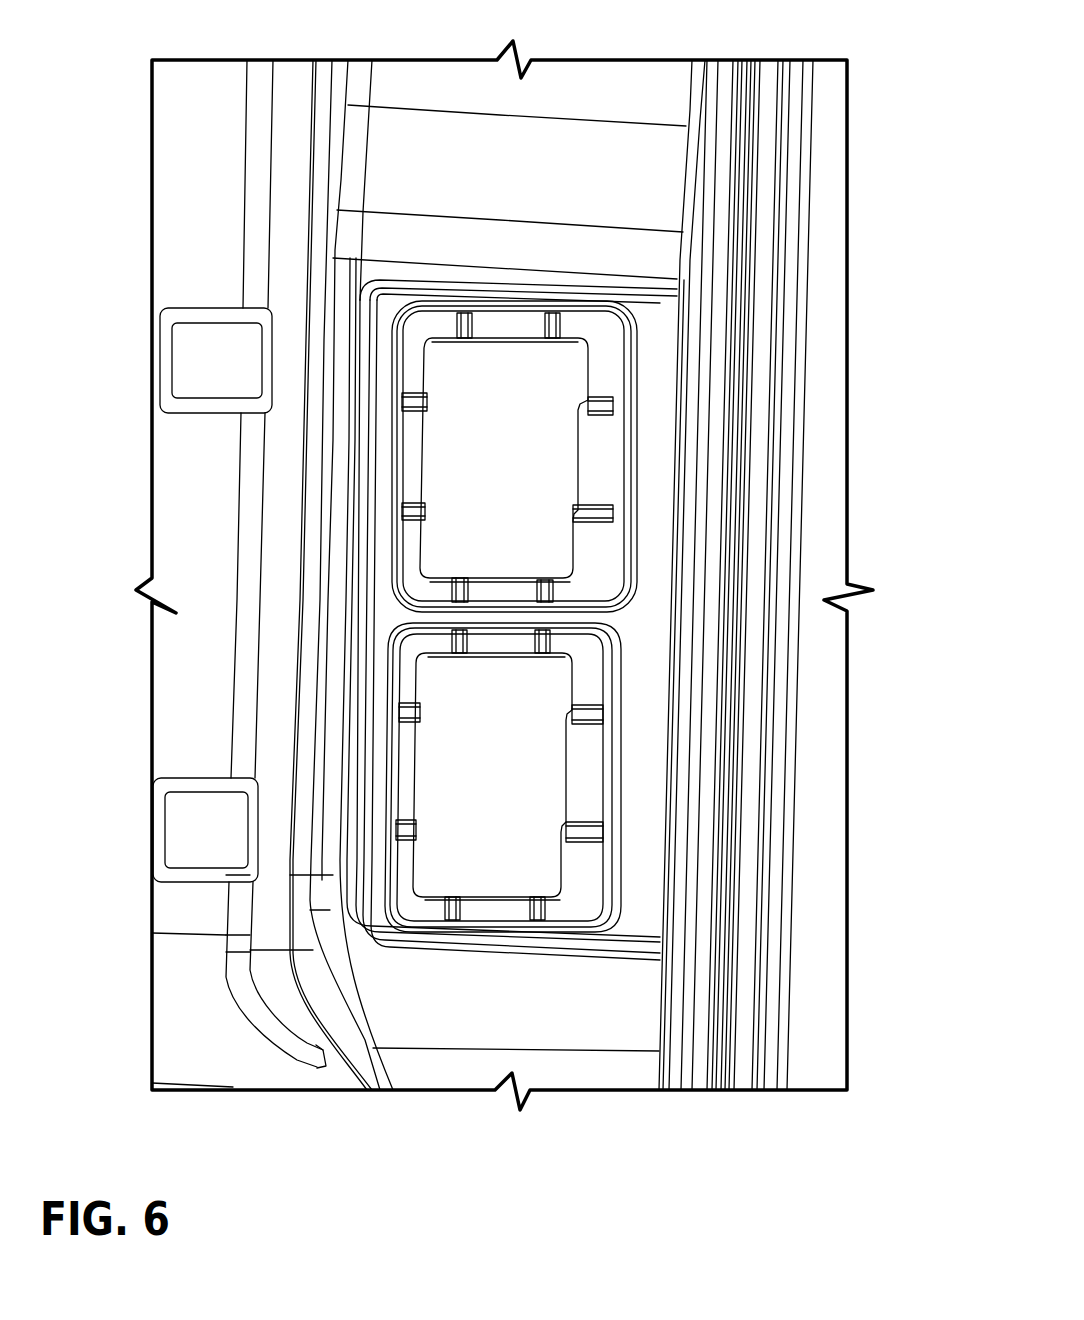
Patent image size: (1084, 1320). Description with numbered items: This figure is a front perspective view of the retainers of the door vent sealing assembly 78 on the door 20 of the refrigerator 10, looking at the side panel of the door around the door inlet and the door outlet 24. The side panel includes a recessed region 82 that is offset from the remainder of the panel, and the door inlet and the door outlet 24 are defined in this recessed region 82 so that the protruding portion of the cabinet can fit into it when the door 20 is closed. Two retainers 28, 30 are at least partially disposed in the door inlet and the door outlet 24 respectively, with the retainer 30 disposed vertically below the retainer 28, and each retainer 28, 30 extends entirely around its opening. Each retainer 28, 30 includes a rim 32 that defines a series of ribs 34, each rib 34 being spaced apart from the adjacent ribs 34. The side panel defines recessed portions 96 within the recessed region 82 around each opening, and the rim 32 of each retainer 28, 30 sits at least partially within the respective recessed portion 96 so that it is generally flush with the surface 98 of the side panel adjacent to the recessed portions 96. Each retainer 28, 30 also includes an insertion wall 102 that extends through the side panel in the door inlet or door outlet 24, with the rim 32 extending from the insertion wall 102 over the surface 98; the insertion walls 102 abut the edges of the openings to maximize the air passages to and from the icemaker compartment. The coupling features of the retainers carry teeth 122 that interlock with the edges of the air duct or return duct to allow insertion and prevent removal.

The refrigerator 10 is at (784, 42).
The door 20 is at (210, 186).
The door outlet 24 is at (513, 870).
The retainer 28 is at (410, 483).
The retainer 30 is at (400, 750).
The rim 32 is at (598, 488).
The ribs 34 is at (553, 327).
The door vent sealing assembly 78 is at (606, 266).
The recessed region 82 is at (650, 425).
The recessed portions 96 is at (620, 327).
The surface 98 is at (373, 913).
The insertion wall 102 is at (572, 430).
The teeth 122 is at (530, 388).